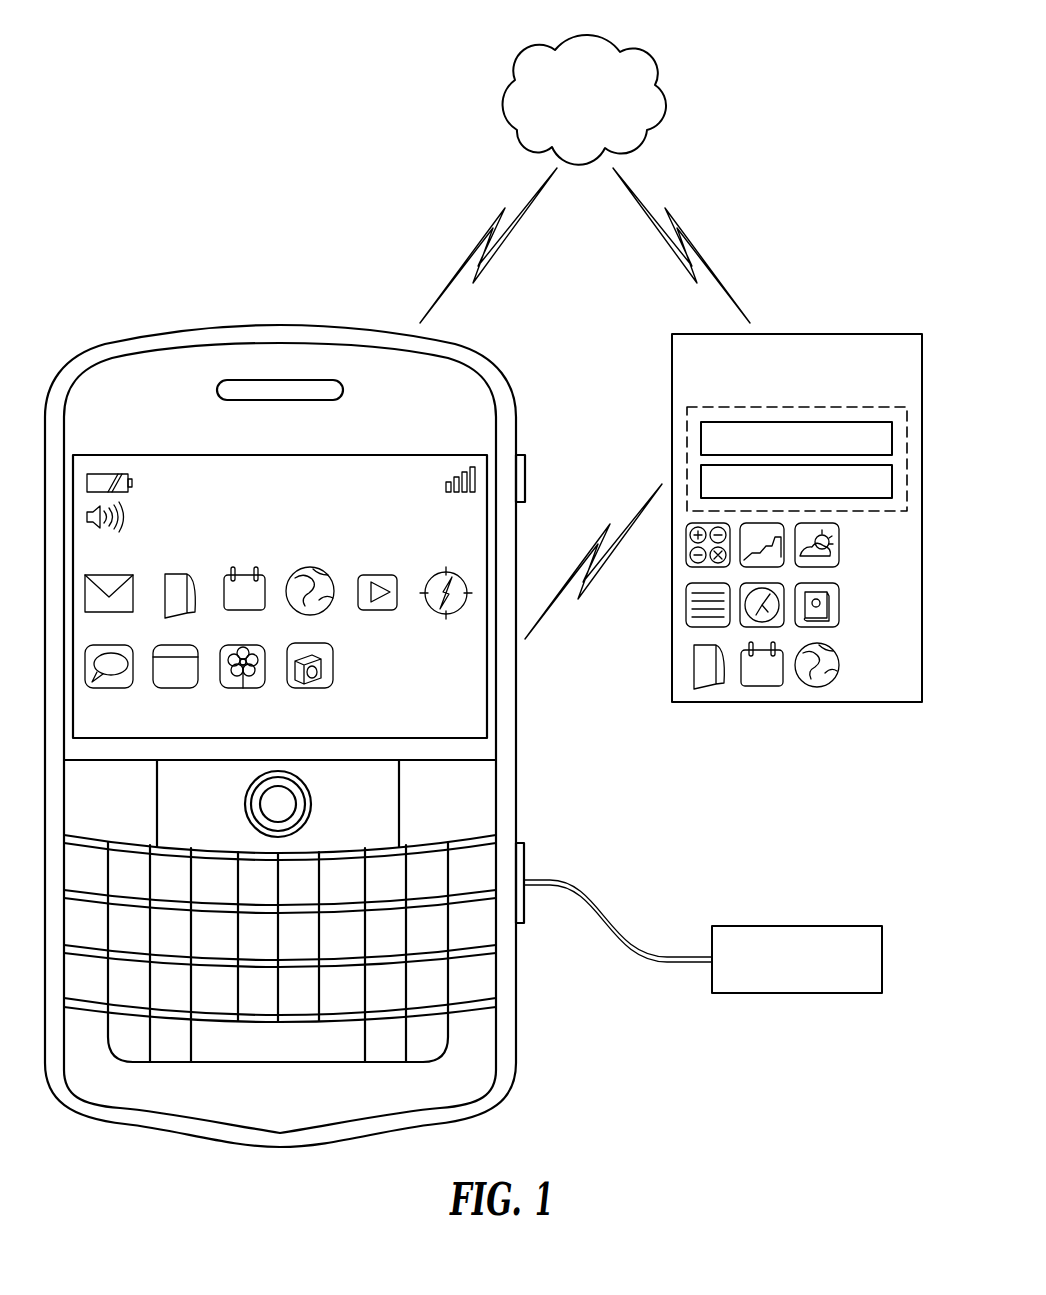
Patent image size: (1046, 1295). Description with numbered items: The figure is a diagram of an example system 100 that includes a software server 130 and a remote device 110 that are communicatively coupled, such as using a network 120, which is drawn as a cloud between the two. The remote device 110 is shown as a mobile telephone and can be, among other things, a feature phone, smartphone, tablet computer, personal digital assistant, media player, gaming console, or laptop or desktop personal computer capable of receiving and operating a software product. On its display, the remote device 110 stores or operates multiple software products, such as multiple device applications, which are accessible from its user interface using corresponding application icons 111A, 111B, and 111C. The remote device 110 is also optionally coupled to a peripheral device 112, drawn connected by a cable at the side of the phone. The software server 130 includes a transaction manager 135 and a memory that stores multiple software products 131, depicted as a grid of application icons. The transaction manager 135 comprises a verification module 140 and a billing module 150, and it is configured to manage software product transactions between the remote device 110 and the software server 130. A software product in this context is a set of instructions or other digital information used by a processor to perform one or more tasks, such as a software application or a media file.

The system 100 is at (128, 98).
The remote device 110 is at (280, 327).
The application icon 111A is at (378, 573).
The application icon 111B is at (437, 613).
The application icon 111C is at (334, 667).
The peripheral device 112 is at (797, 926).
The network 120 is at (645, 63).
The software server 130 is at (797, 334).
The software products 131 is at (843, 522).
The transaction manager 135 is at (797, 407).
The verification module 140 is at (893, 437).
The billing module 150 is at (893, 481).